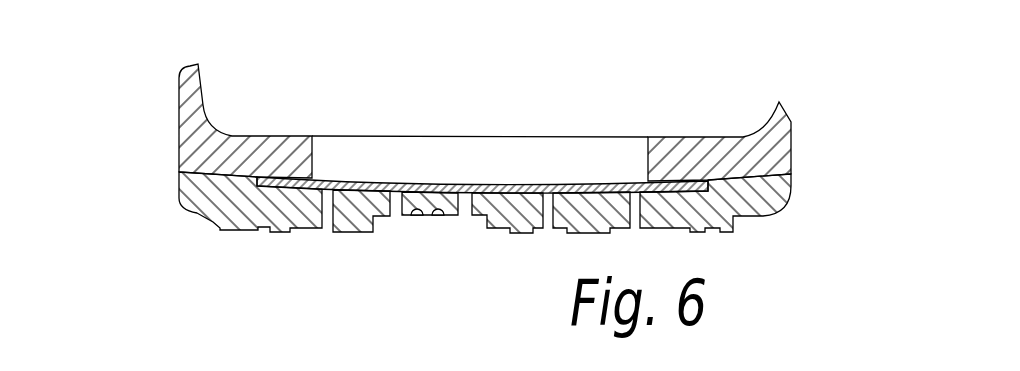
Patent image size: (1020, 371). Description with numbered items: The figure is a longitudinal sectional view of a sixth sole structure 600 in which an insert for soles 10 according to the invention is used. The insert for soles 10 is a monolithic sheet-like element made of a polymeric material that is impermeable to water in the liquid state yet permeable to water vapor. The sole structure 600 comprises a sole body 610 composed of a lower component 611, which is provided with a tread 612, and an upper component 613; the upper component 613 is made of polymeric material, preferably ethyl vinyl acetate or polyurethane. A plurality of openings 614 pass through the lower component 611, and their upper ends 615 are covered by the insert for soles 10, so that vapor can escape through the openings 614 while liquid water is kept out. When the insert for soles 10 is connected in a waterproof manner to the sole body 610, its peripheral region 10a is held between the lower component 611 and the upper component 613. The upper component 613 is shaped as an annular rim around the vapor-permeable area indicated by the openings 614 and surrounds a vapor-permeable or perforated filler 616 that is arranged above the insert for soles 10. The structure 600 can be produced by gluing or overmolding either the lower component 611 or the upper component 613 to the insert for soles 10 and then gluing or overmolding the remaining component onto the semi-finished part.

The sixth sole structure 600 is at (472, 170).
The insert for soles 10 is at (433, 104).
The peripheral region 10a is at (433, 101).
The sole body 610 is at (424, 250).
The lower component 611 is at (251, 241).
The tread 612 is at (500, 230).
The upper component 613 is at (168, 128).
The openings 614 is at (395, 207).
The upper ends 615 is at (503, 188).
The vapor-permeable or perforated filler 616 is at (558, 160).